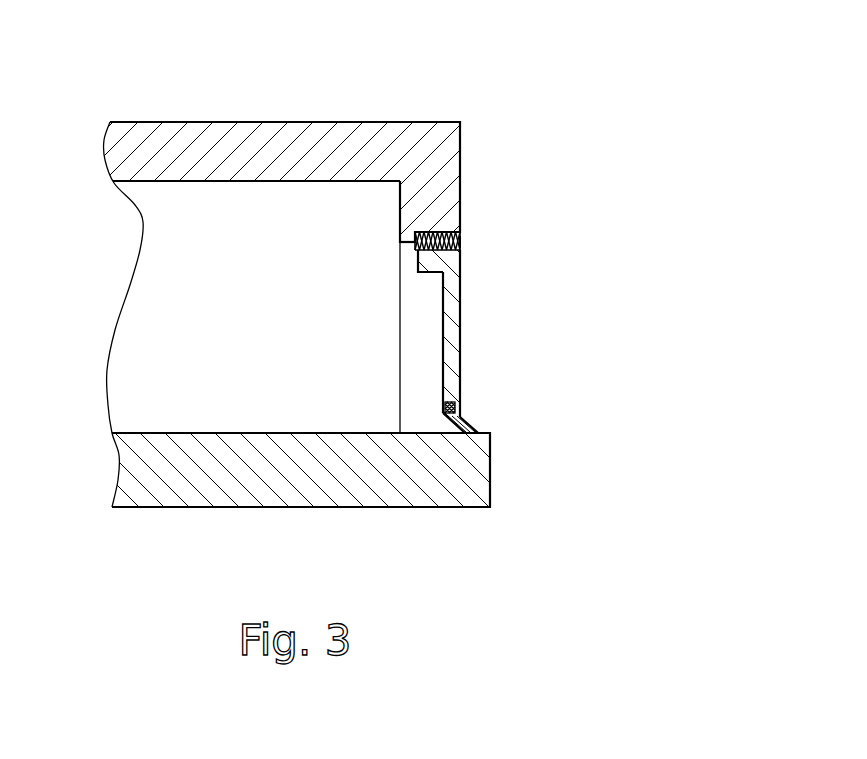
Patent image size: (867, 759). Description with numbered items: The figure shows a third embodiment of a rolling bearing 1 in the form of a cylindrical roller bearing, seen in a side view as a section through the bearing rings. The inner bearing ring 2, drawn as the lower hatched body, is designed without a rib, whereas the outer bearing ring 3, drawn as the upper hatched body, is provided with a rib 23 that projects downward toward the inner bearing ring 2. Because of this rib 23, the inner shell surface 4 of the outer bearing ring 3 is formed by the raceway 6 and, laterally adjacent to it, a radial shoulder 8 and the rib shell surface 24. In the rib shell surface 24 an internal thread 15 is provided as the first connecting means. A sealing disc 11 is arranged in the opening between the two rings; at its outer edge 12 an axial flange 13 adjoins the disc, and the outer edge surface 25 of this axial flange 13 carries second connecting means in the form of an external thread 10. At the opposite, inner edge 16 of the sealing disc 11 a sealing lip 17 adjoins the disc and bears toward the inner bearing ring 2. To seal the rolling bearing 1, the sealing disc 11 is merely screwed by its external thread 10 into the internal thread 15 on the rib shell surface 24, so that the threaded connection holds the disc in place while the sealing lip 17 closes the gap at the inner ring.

The rolling bearing 1 is at (512, 60).
The inner bearing ring 2 is at (201, 493).
The outer bearing ring 3 is at (173, 162).
The inner shell surface 4 is at (123, 232).
The raceway 6 is at (184, 184).
The radial shoulder 8 is at (416, 251).
The external thread 10 is at (412, 248).
The sealing disc 11 is at (455, 330).
The outer edge 12 is at (469, 277).
The axial flange 13 is at (441, 262).
The internal thread 15 is at (448, 232).
The inner edge 16 is at (470, 404).
The sealing lip 17 is at (462, 424).
The rib 23 is at (435, 128).
The rib shell surface 24 is at (217, 299).
The outer edge surface 25 is at (462, 241).